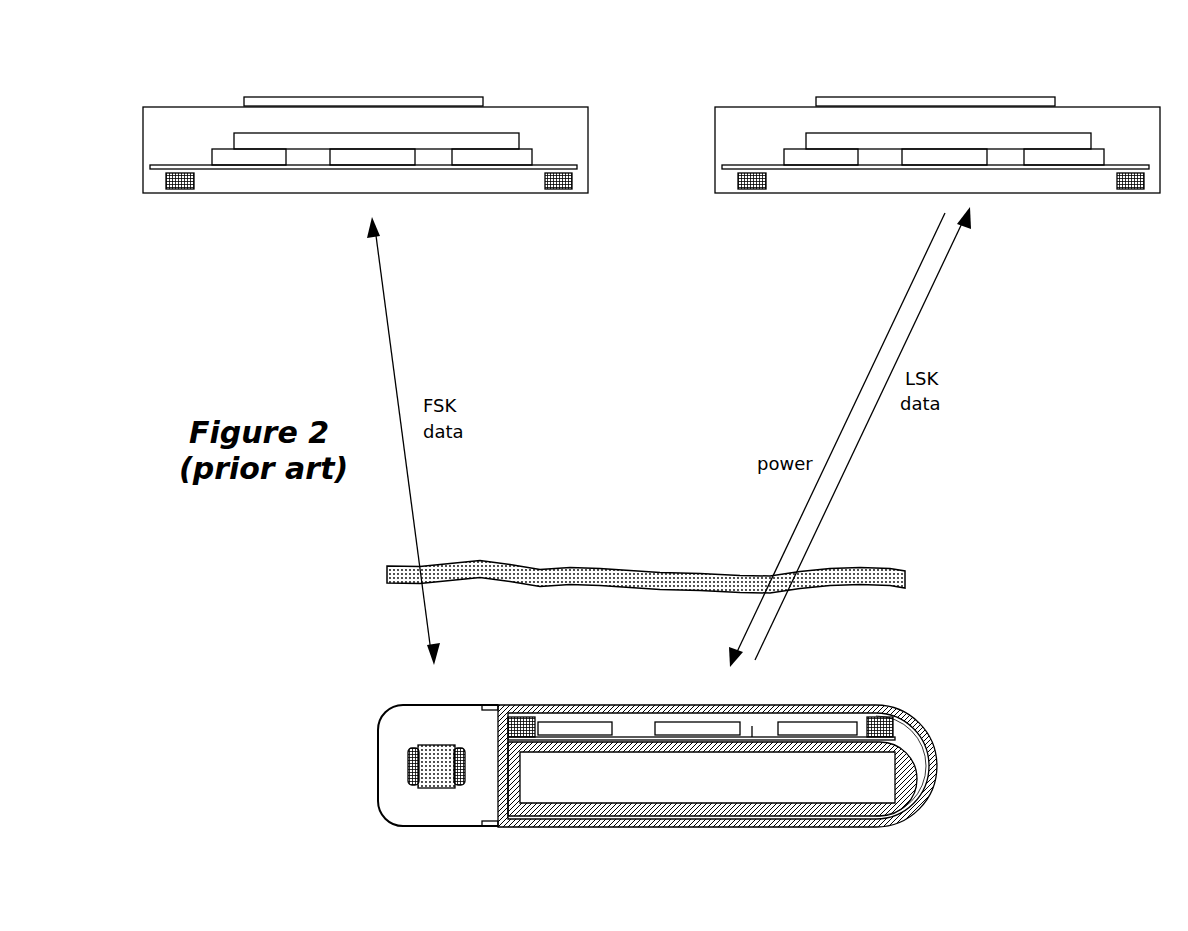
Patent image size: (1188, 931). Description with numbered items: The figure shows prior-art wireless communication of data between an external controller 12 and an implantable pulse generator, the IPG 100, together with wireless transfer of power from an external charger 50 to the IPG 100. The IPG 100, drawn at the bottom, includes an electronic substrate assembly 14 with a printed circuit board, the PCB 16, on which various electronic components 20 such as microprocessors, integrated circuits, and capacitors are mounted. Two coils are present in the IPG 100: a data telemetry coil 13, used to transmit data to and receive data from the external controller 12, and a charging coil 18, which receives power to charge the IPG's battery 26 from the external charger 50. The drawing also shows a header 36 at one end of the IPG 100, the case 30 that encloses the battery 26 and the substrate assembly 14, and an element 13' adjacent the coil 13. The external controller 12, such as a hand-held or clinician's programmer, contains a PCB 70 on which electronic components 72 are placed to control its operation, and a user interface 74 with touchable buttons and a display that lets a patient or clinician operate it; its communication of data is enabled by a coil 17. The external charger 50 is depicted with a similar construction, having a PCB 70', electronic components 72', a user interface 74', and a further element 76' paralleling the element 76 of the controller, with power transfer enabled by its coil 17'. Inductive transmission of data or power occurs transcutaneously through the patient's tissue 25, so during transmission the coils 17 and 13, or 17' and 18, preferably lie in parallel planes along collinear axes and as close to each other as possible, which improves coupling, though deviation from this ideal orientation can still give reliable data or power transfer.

The external controller 12 is at (205, 58).
The external charger 50 is at (778, 58).
The PCB 70 is at (363, 117).
The PCB 70' is at (935, 117).
The electronic components 72 is at (374, 138).
The electronic components 72' is at (948, 138).
The user interface 74 is at (363, 80).
The user interface 74' is at (935, 80).
The coil of external controller 76 is at (376, 111).
The coil of external charger 76' is at (948, 111).
The coil 17 is at (368, 191).
The coil 17' is at (937, 191).
The patient's tissue 25 is at (882, 572).
The IPG 100 is at (333, 733).
The header 36 is at (405, 705).
The data telemetry coil 13 is at (436, 781).
The electrode array / connector block 13' is at (443, 753).
The case 30 is at (542, 826).
The battery 26 is at (712, 779).
The electronic substrate assembly 14 is at (638, 737).
The charging coil 18 is at (519, 716).
The electronic components 20 is at (577, 728).
The printed circuit board (PCB) 16 is at (753, 735).